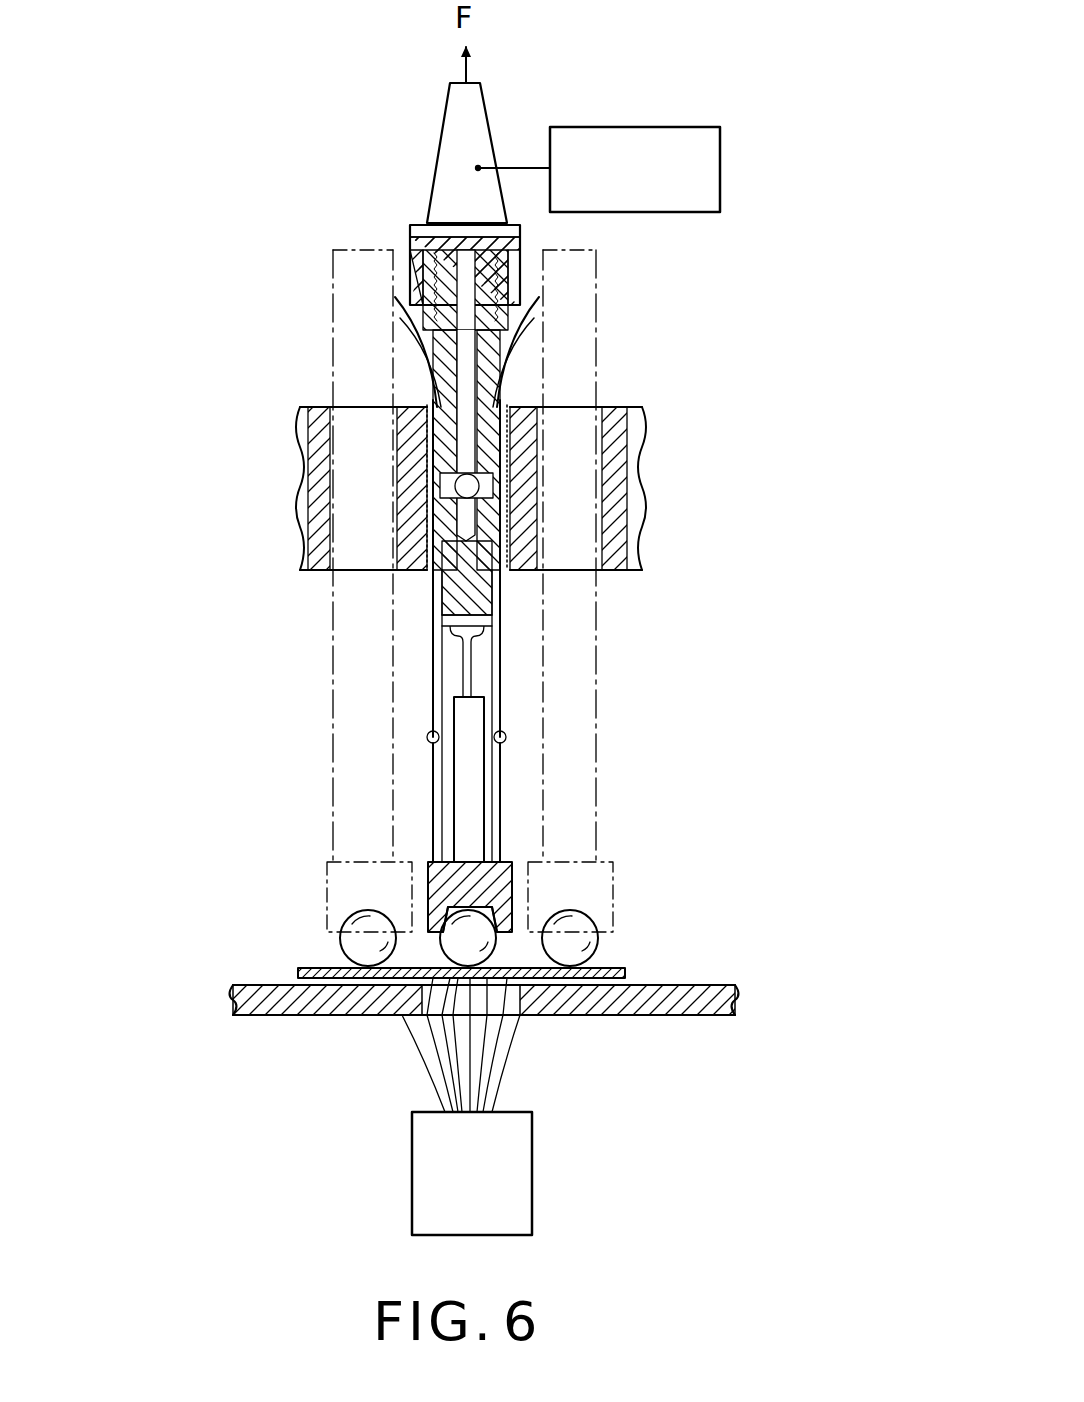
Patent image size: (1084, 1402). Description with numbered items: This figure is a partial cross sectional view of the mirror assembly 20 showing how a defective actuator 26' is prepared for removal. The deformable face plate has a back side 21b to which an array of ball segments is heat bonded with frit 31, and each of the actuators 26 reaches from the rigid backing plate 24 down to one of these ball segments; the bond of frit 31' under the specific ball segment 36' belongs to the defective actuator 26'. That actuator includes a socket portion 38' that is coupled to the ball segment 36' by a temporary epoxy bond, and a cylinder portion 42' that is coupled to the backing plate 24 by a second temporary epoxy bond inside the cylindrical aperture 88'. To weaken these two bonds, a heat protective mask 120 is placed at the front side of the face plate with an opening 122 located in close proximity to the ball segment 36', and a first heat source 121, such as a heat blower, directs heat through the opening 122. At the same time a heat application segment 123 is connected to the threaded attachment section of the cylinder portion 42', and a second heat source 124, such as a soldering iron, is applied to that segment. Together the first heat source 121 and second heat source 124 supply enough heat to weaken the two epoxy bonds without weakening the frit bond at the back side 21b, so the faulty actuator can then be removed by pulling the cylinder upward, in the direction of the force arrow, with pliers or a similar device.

The mirror assembly 20 is at (648, 730).
The back side 21b is at (628, 962).
The rigid backing plate 24 is at (643, 528).
The actuators 26 is at (474, 591).
The defective actuator 26' is at (540, 596).
The frit 31 is at (507, 938).
The frit 31' is at (448, 890).
The ball segment 36' is at (558, 904).
The socket portion 38' is at (543, 868).
The cylinder portion 42' is at (532, 316).
The cylindrical aperture 88' is at (360, 352).
The heat protective mask 120 is at (668, 1012).
The first heat source 121 is at (532, 1142).
The opening 122 is at (497, 1000).
The heat application segment 123 is at (522, 113).
The second heat source 124 is at (720, 155).